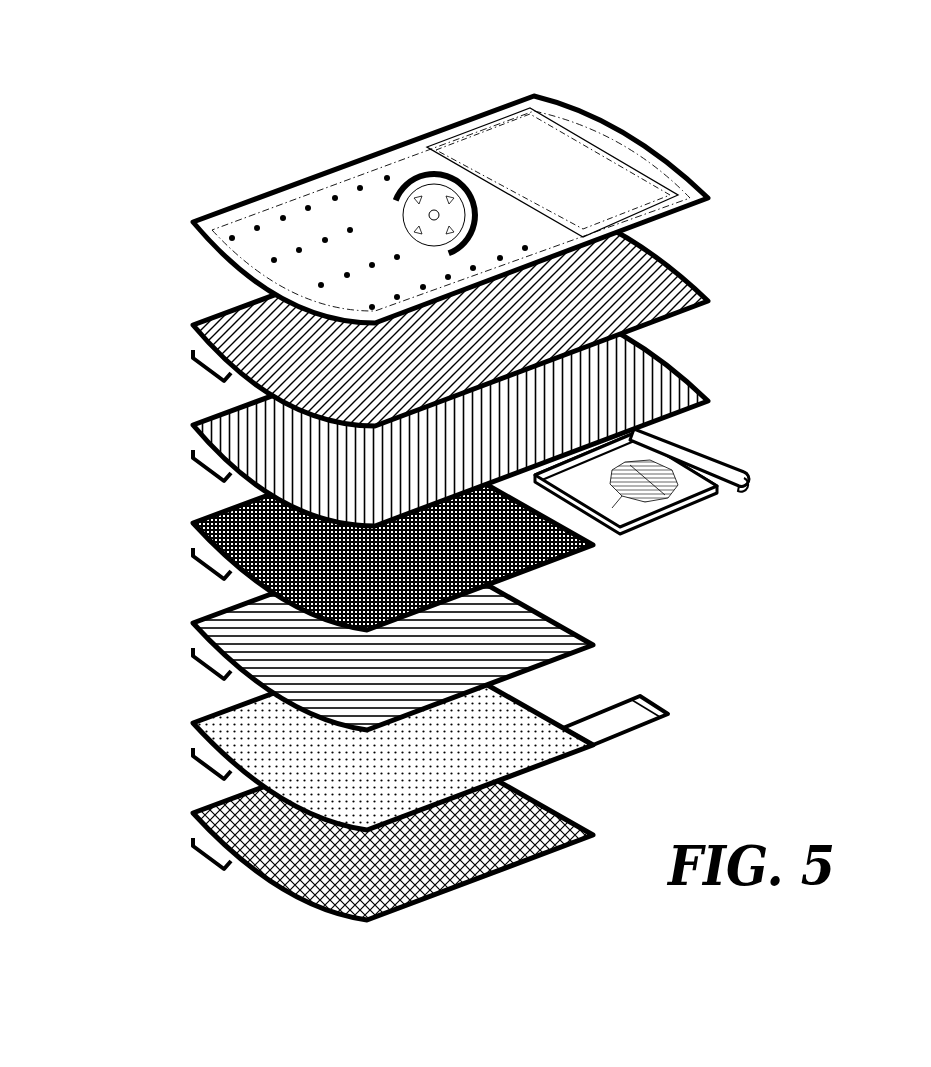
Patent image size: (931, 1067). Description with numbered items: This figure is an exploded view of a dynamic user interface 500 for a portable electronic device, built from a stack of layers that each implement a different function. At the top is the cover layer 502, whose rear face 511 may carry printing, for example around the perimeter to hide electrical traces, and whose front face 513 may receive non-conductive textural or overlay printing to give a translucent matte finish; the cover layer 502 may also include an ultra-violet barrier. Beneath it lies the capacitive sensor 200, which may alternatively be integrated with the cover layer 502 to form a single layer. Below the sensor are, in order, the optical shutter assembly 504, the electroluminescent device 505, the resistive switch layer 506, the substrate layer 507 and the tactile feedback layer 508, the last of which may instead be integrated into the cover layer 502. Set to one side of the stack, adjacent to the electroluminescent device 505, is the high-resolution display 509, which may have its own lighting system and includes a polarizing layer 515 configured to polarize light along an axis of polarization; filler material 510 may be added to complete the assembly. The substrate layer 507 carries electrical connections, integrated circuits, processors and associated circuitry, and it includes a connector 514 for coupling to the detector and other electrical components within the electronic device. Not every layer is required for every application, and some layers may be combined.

The dynamic user interface 500 is at (197, 70).
The cover layer 502 is at (612, 140).
The rear face 511 is at (208, 278).
The front face 513 is at (220, 243).
The capacitive sensor 200 is at (668, 255).
The optical shutter assembly 504 is at (662, 390).
The electroluminescent device 505 is at (226, 513).
The resistive switch layer 506 is at (228, 612).
The substrate layer 507 is at (228, 715).
The tactile feedback layer 508 is at (228, 805).
The high-resolution display 509 is at (712, 495).
The filler material 510 is at (688, 442).
The polarizing layer 515 is at (662, 470).
The connector 514 is at (655, 708).